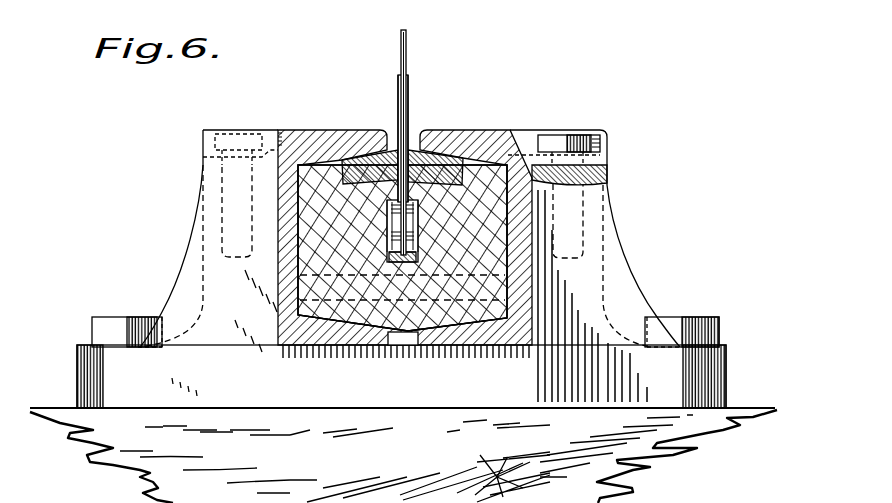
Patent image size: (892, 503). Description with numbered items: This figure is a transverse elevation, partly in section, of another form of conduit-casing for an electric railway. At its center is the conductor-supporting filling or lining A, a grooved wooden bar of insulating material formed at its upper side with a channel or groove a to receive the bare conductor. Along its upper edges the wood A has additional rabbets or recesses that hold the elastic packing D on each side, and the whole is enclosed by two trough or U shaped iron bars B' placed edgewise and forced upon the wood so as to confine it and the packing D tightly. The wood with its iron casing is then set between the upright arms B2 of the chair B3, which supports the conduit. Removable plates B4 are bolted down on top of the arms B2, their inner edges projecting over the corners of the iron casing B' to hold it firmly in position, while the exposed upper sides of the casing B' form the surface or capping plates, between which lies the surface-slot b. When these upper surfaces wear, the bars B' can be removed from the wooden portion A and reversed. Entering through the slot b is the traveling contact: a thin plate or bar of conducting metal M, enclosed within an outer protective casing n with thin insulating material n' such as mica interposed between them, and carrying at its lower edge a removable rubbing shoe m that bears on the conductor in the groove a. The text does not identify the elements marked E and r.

The plate or bar of conducting metal M is at (407, 58).
The thin insulating material n' is at (392, 138).
The outer protective casing n is at (417, 138).
The surface-slot b is at (414, 144).
The elastic packing D is at (340, 152).
The rubbing shoe m is at (306, 130).
The removable plates B4 is at (203, 154).
The trough or U shaped iron bars B' is at (402, 212).
The upright arms B2 is at (185, 270).
The chair B3 is at (402, 376).
The water or ground E is at (403, 456).
The conductor-supporting filling or lining A is at (402, 248).
The channel or groove a is at (402, 221).
The bottom plate of lower member r is at (387, 256).